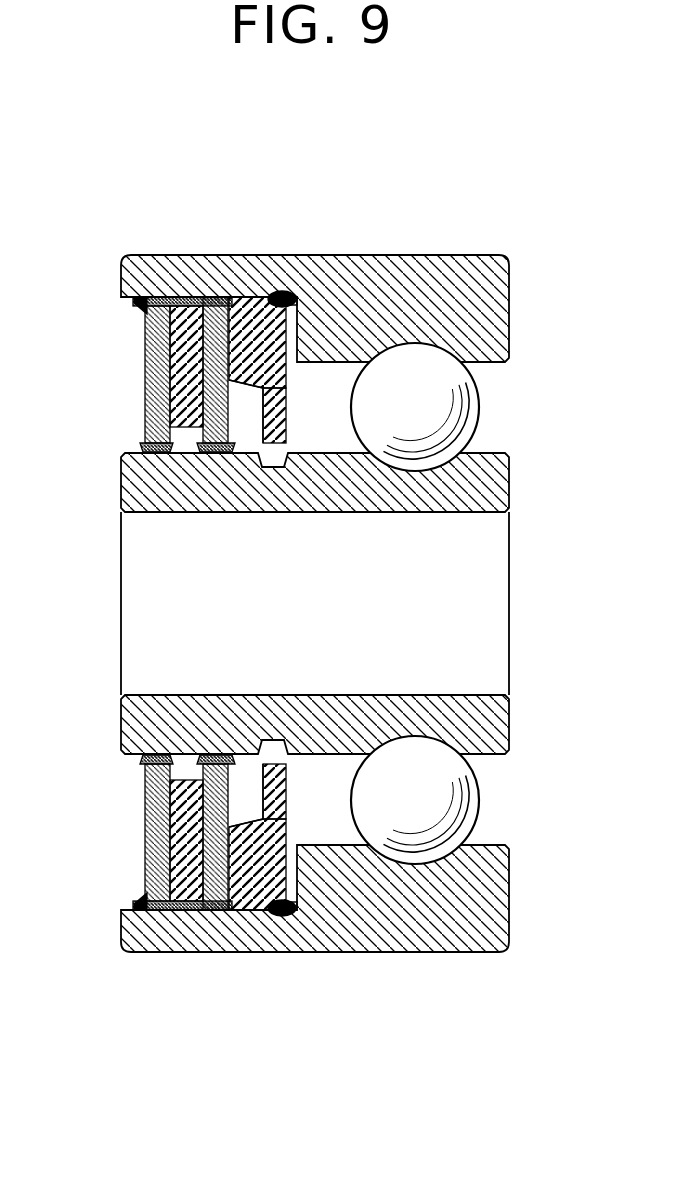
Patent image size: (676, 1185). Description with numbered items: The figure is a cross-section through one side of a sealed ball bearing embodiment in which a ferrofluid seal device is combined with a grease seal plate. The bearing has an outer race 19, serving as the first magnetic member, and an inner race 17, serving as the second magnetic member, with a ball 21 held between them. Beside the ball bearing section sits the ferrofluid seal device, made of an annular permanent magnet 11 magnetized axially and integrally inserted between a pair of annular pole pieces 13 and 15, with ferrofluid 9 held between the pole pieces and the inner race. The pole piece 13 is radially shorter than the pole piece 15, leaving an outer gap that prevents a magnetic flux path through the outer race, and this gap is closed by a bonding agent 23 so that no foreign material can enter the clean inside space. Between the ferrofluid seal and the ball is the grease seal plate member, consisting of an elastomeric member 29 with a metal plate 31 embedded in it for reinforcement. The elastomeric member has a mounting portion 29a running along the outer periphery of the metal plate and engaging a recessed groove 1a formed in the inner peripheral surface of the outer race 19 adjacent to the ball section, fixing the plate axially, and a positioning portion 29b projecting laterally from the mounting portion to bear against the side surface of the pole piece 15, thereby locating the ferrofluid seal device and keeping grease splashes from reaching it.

The outer ring groove 1a is at (289, 294).
The ferrofluid 9 is at (140, 445).
The annular permanent magnet 11 is at (165, 370).
The pole piece 13 is at (148, 337).
The pole piece 15 is at (207, 300).
The inner race 17 is at (505, 487).
The outer race 19 is at (505, 292).
The ball 21 is at (478, 403).
The bonding agent 23 is at (135, 308).
The elastomeric member 29 is at (294, 410).
The mounting portion 29a is at (294, 296).
The positioning portion 29b is at (247, 298).
The metal plate 31 is at (285, 380).